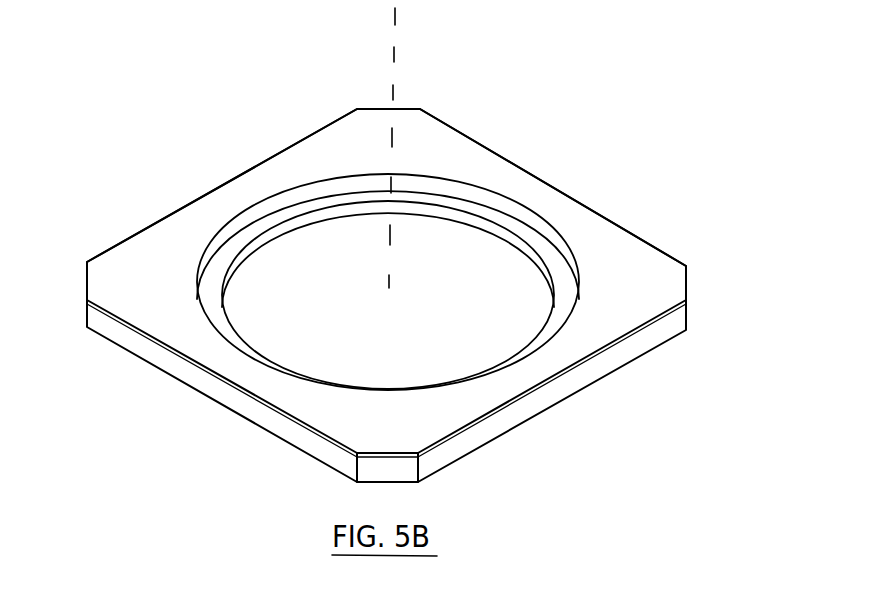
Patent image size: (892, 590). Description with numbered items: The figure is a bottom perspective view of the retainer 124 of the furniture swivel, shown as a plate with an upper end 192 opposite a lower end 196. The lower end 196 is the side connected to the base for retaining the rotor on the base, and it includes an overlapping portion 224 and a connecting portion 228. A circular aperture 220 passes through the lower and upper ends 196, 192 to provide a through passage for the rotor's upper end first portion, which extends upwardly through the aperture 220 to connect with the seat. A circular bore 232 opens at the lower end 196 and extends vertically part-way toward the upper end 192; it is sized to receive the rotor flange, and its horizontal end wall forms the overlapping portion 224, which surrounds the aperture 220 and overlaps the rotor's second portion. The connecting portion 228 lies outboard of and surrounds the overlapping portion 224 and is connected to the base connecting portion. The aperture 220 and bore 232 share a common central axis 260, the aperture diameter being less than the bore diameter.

The retainer 124 is at (686, 137).
The upper end 192 is at (670, 283).
The lower end 196 is at (645, 349).
The connecting portion 228 is at (648, 260).
The bore 232 is at (488, 199).
The aperture 220 is at (508, 238).
The overlapping portion 224 is at (556, 262).
The central axis 260 is at (397, 22).